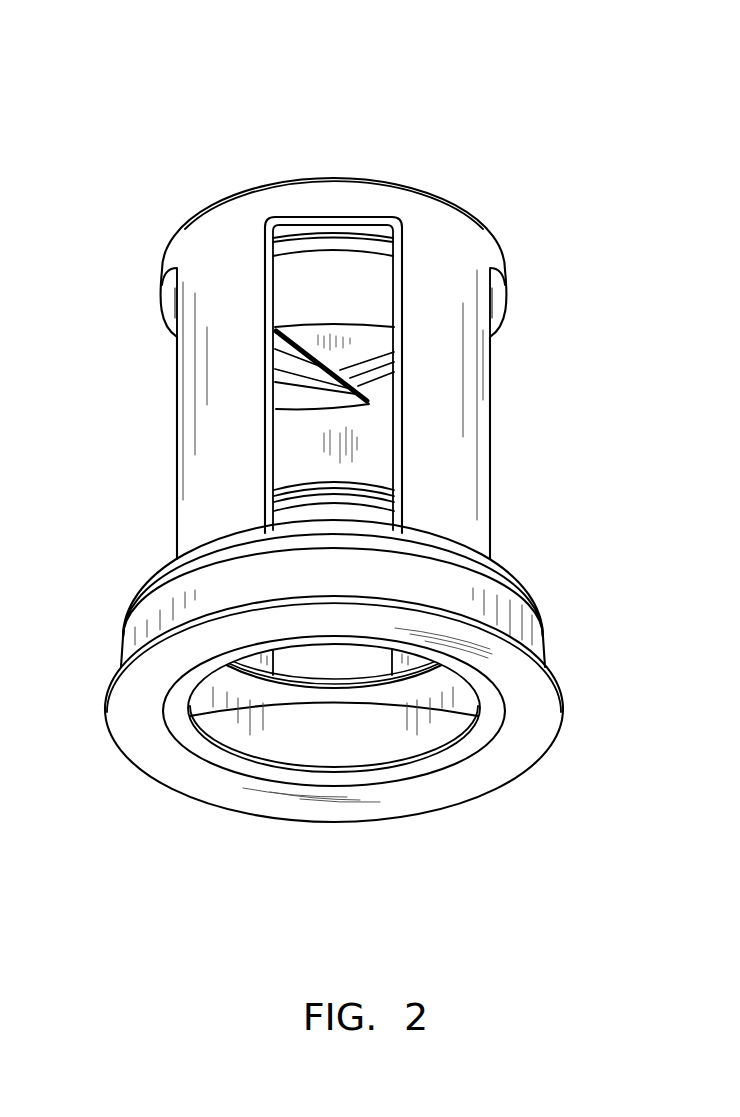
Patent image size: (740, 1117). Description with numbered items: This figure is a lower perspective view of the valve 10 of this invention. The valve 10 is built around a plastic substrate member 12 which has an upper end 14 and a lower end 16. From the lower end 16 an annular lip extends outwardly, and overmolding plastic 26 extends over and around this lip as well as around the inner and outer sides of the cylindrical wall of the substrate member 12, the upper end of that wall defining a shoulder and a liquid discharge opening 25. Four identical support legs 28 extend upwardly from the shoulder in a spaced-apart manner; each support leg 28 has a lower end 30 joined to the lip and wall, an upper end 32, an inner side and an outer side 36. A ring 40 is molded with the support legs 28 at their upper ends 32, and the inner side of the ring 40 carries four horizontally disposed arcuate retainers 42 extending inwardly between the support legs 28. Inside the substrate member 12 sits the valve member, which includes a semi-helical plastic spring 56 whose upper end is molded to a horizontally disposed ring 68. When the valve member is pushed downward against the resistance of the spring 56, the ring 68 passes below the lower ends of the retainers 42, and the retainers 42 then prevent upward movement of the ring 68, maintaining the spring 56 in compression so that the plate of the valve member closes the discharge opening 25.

The valve 10 is at (380, 139).
The plastic substrate member 12 is at (470, 464).
The upper end 14 is at (478, 200).
The lower end 16 is at (473, 815).
The liquid discharge opening 25 is at (440, 725).
The overmolding plastic 26 is at (517, 612).
The support legs 28 is at (200, 387).
The lower end 30 is at (207, 550).
The upper end 32 is at (215, 258).
The outer side 36 is at (244, 489).
The ring 40 is at (494, 222).
The arcuate retainers 42 is at (313, 226).
The semi-helical plastic spring 56 is at (347, 360).
The ring 68 is at (373, 248).